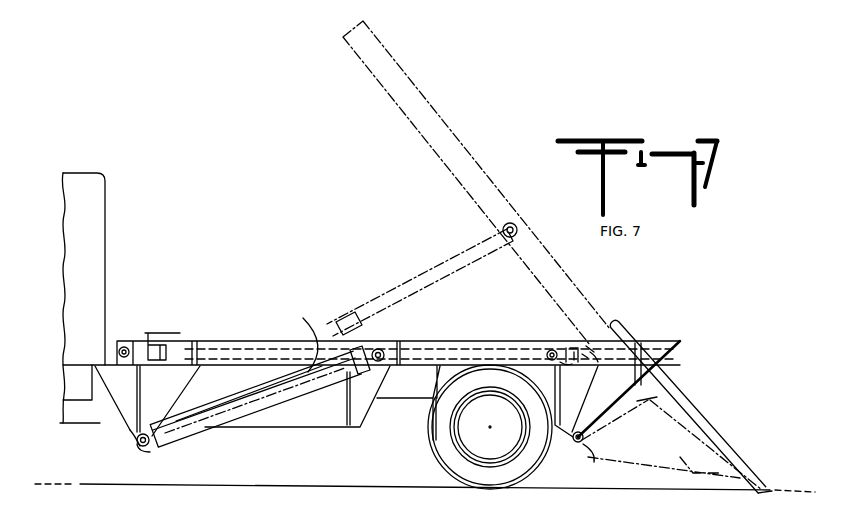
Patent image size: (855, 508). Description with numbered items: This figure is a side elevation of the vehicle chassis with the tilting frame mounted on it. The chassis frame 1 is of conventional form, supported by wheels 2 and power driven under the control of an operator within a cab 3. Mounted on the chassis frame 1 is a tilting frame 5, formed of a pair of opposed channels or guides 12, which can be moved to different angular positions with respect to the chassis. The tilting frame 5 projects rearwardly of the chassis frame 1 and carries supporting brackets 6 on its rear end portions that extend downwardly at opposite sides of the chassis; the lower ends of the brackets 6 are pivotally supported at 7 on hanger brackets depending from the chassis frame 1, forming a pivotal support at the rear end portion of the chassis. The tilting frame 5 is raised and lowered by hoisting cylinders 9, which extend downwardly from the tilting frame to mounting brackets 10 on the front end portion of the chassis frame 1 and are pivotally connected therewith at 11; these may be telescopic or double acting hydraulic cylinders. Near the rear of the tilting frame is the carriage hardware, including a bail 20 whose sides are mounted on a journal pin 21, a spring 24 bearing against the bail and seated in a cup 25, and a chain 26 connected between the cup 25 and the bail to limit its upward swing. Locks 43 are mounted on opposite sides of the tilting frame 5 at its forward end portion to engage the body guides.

The chassis frame 1 is at (82, 430).
The wheels 2 is at (450, 455).
The cab 3 is at (100, 179).
The tilting frame 5 is at (367, 37).
The supporting brackets 6 is at (620, 456).
The pivot 7 is at (578, 443).
The hoisting cylinders 9 is at (312, 323).
The mounting brackets 10 is at (132, 434).
The pivotal connection 11 is at (141, 448).
The channels or guides 12 is at (237, 350).
The bail 20 is at (630, 318).
The journal pin 21 is at (548, 352).
The spring 24 is at (569, 348).
The cup 25 is at (562, 367).
The chain 26 is at (600, 356).
The locks 43 is at (150, 336).